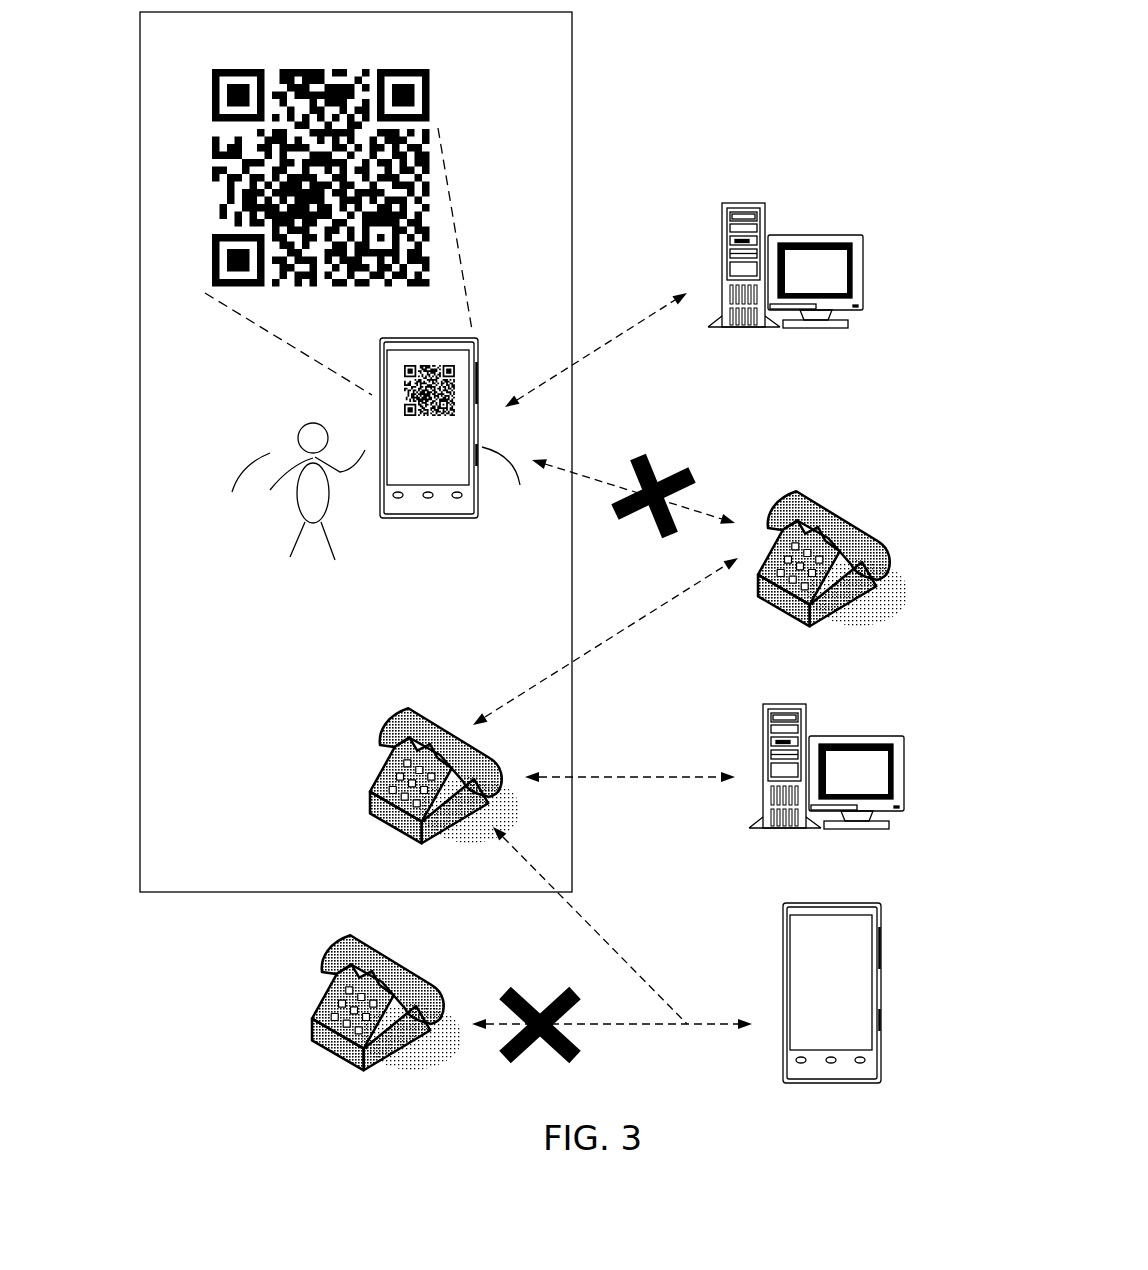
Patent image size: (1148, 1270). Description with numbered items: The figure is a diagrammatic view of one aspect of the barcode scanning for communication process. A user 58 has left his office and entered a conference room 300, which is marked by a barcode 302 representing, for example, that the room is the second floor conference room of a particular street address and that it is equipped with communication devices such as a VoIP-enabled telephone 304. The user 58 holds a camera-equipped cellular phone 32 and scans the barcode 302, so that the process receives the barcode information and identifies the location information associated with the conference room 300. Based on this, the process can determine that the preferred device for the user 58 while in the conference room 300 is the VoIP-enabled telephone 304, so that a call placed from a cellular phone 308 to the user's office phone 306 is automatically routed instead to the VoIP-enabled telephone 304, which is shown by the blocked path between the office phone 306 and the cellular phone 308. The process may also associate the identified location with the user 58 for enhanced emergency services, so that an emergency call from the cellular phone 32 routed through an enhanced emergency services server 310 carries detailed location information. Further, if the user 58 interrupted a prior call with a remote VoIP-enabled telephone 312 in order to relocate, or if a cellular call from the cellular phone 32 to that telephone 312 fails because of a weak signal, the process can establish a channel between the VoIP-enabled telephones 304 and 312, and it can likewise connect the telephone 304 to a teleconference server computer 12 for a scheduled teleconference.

The conference room 300 is at (140, 40).
The barcode 302 is at (205, 137).
The cellular phone 32 is at (457, 431).
The user 58 is at (371, 491).
The enhanced emergency services server 310 is at (714, 241).
The server computer 12 is at (747, 740).
The VoIP-enabled telephone 312 is at (765, 505).
The VoIP-enabled telephone 304 is at (388, 765).
The office phone 306 is at (316, 947).
The cellular phone 308 is at (783, 933).